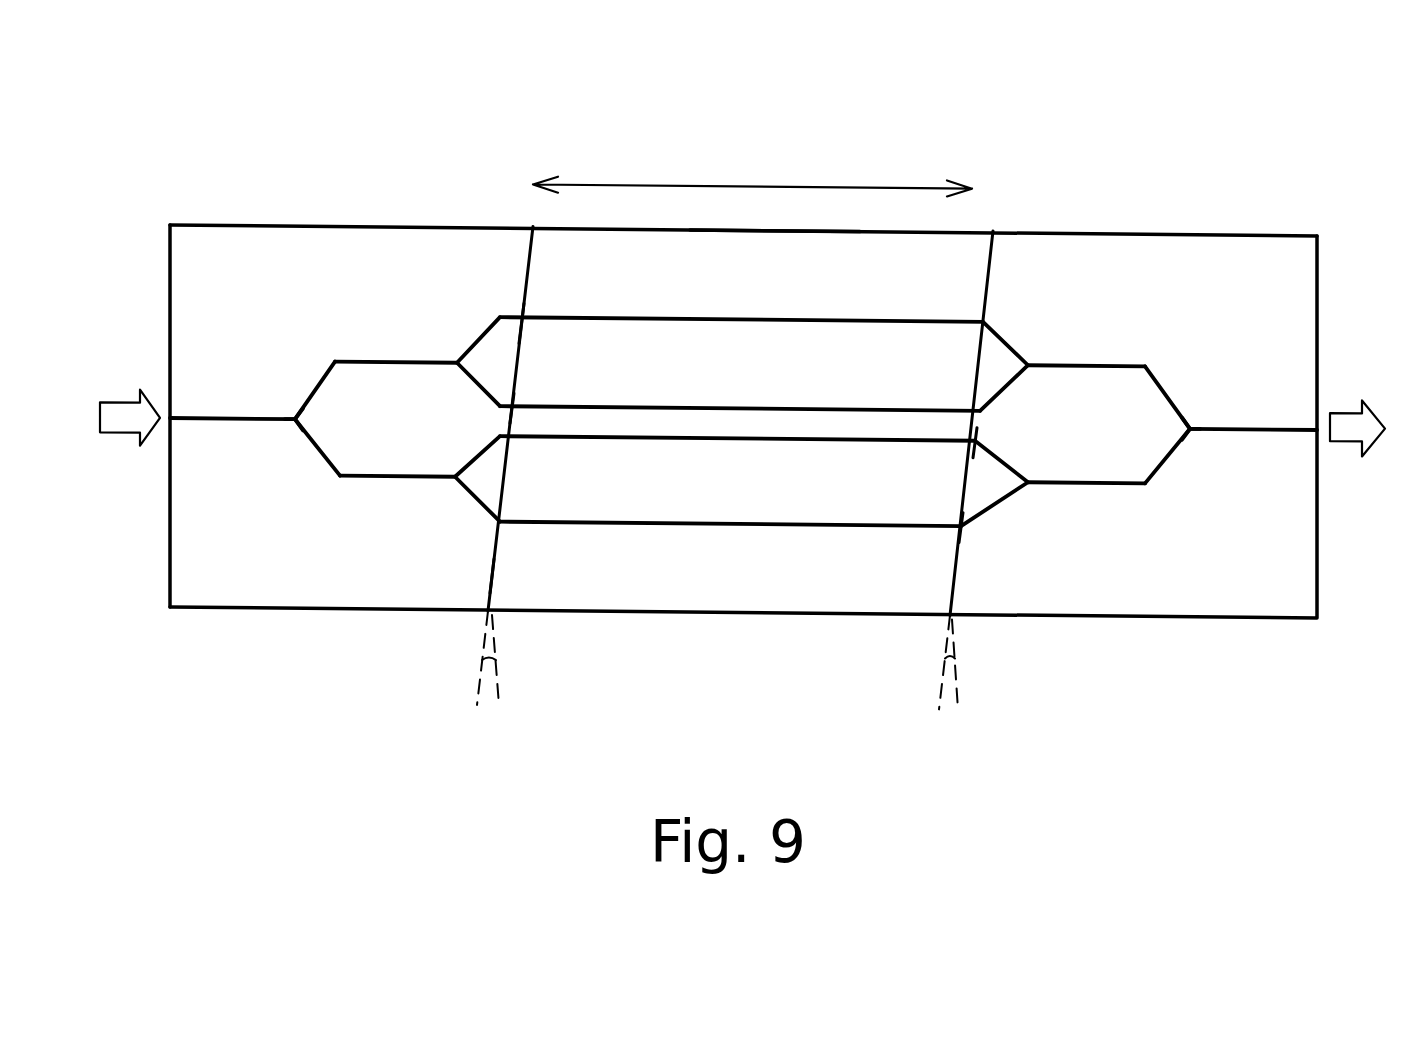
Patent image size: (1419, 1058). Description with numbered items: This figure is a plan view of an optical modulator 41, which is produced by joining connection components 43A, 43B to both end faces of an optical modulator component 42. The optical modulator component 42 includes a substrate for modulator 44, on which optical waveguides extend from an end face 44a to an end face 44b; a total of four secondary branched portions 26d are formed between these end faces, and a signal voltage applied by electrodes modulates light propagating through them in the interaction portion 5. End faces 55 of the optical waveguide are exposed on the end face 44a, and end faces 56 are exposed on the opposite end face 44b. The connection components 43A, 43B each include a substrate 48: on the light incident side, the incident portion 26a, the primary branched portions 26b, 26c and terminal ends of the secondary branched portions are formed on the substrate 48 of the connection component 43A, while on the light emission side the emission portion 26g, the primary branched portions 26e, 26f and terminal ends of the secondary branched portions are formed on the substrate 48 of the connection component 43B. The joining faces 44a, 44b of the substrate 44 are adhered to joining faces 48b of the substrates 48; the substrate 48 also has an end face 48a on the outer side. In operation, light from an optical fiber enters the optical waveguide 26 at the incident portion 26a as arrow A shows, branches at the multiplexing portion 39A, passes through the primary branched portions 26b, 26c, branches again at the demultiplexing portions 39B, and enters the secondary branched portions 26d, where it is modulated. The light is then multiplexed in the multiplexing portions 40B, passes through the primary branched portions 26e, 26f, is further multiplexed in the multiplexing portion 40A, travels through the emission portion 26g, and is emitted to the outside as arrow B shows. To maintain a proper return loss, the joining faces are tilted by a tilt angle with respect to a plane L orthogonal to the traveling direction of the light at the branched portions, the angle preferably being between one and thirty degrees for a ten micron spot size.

The optical modulator 41 is at (1287, 216).
The substrate 48 is at (322, 244).
The input end face of substrate 48a is at (167, 548).
The joining face 48b is at (498, 562).
The connection component 43A is at (258, 226).
The connection component 43B is at (1156, 218).
The substrate for modulator 44 is at (665, 244).
The end face 44a is at (531, 247).
The end face 44b is at (995, 253).
The optical modulator component 42 is at (772, 221).
The interaction portion 5 is at (860, 181).
The optical waveguide 26 is at (282, 389).
The incident portion 26a is at (217, 417).
The primary branched portions 26b is at (320, 378).
The primary branched portions 26c is at (387, 360).
The secondary branched portions 26d is at (748, 399).
The primary branched portions 26e is at (1100, 365).
The primary branched portions 26f is at (1165, 393).
The emission portion 26g is at (1243, 428).
The multiplexing portion 39A is at (290, 425).
The demultiplexing portions 39B is at (458, 360).
The multiplexing portion 40A is at (1192, 430).
The multiplexing portions 40B is at (1028, 365).
The end faces of the optical waveguide 55 is at (521, 313).
The end faces of the optical waveguide 56 is at (975, 437).
The plane L is at (500, 670).
The arrow A is at (115, 400).
The arrow B is at (1360, 395).